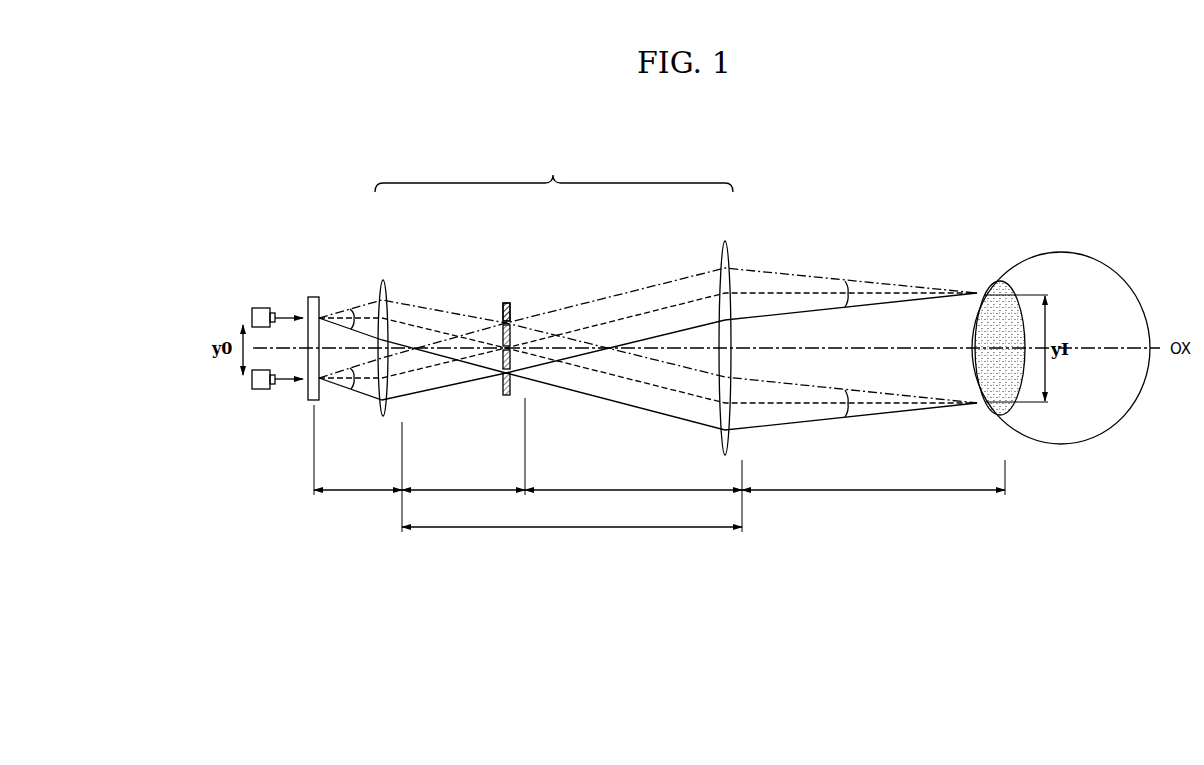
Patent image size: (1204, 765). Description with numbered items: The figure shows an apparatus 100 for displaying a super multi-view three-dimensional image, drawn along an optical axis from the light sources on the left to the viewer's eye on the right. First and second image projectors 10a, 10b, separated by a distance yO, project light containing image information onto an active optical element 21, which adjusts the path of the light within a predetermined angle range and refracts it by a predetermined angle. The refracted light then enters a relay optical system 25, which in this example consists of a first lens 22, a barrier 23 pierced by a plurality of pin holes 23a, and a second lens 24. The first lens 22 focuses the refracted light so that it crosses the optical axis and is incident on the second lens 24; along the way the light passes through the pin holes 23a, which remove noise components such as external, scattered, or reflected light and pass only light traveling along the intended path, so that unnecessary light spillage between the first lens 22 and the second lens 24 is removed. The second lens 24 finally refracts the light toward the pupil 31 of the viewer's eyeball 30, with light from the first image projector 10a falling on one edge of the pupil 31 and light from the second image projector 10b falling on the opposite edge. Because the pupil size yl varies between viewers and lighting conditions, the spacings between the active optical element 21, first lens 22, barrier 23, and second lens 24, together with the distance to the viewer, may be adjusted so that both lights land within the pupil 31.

The apparatus 100 is at (300, 552).
The first image projector 10a is at (261, 308).
The second image projector 10b is at (262, 389).
The active optical element 21 is at (314, 297).
The first lens 22 is at (383, 280).
The barrier 23 is at (507, 303).
The pin holes 23a is at (515, 320).
The second lens 24 is at (725, 241).
The relay optical system 25 is at (552, 306).
The eyeball 30 is at (1104, 268).
The pupil 31 is at (1005, 282).